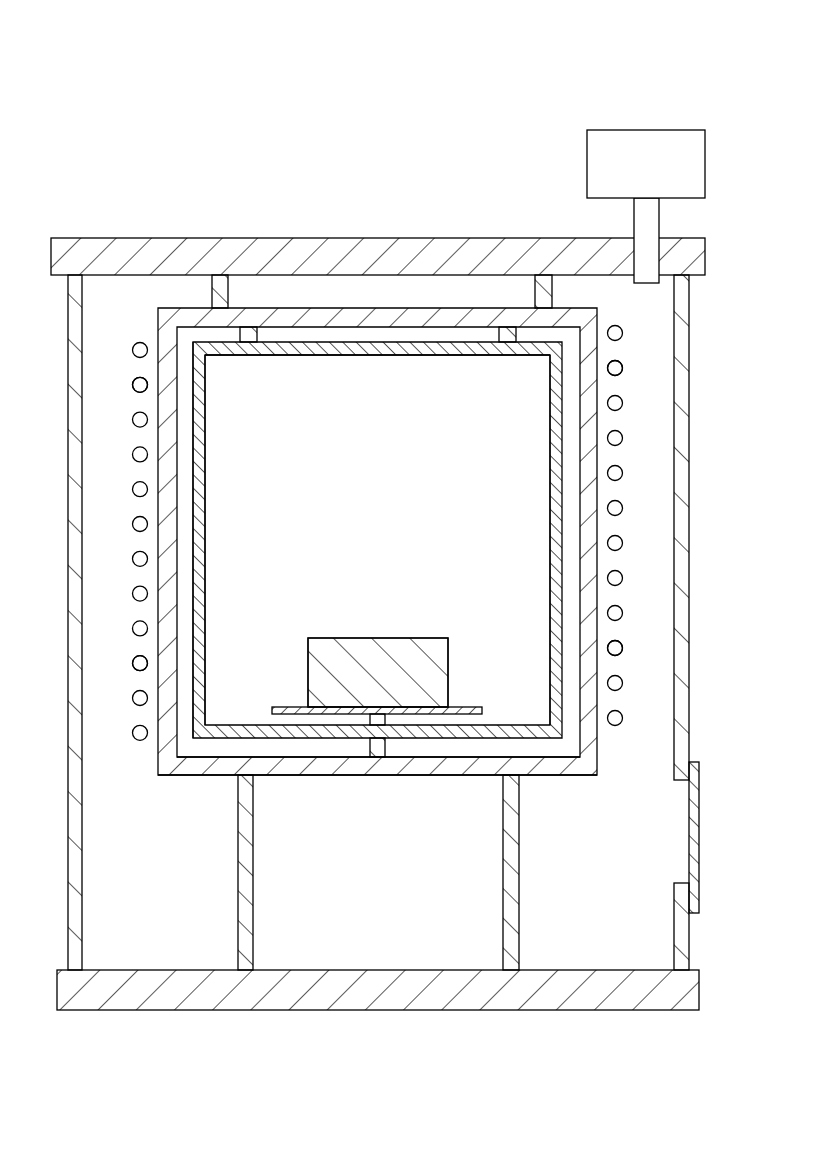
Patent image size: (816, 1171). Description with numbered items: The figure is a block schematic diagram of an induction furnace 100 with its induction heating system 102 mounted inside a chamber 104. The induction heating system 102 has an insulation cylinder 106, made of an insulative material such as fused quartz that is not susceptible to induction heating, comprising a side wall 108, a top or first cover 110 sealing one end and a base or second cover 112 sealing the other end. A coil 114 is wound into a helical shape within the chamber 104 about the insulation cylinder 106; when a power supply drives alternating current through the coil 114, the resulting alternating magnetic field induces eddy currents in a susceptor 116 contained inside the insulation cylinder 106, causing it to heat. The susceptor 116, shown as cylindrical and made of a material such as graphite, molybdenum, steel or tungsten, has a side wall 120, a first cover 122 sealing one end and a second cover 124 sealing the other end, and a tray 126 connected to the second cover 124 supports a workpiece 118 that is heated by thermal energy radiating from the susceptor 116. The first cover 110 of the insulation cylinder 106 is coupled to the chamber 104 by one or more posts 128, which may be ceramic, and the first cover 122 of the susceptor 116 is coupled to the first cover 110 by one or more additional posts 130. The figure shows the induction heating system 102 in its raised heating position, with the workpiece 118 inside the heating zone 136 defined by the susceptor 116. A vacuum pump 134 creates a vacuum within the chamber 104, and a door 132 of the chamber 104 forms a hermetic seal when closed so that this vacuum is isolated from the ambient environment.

The induction furnace 100 is at (215, 52).
The induction heating system 102 is at (140, 286).
The chamber 104 is at (247, 238).
The insulation cylinder 106 is at (158, 332).
The side wall 108 is at (158, 469).
The first cover 110 is at (493, 308).
The second cover 112 is at (183, 775).
The coil 114 is at (133, 385).
The susceptor 116 is at (207, 443).
The workpiece 118 is at (376, 637).
The side wall 120 is at (207, 498).
The first cover 122 is at (377, 356).
The second cover 124 is at (500, 725).
The tray 126 is at (283, 706).
The post 128 is at (231, 293).
The additional post 130 is at (273, 333).
The door 132 is at (690, 847).
The vacuum pump 134 is at (587, 163).
The heating zone 136 is at (326, 594).